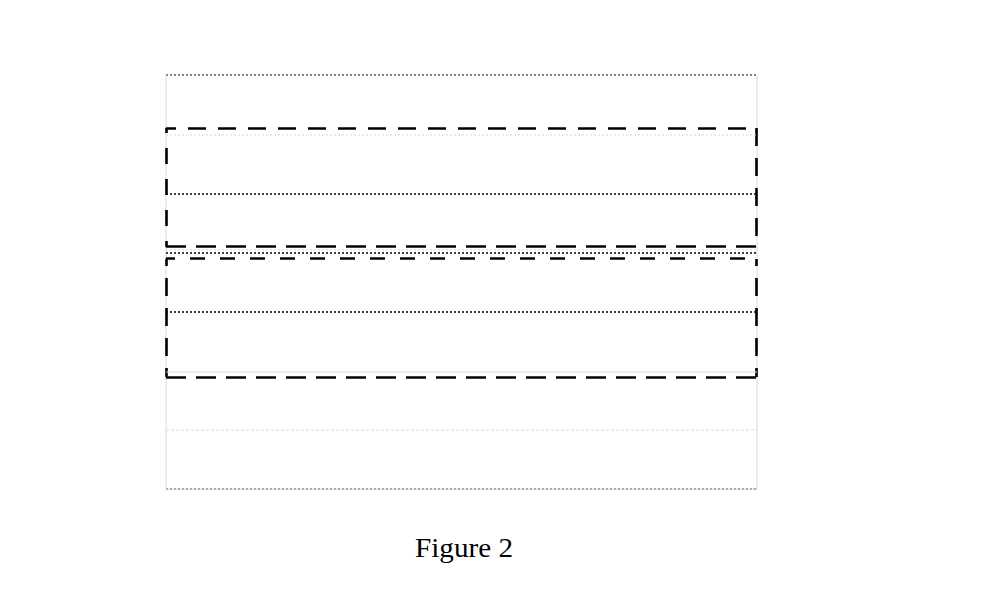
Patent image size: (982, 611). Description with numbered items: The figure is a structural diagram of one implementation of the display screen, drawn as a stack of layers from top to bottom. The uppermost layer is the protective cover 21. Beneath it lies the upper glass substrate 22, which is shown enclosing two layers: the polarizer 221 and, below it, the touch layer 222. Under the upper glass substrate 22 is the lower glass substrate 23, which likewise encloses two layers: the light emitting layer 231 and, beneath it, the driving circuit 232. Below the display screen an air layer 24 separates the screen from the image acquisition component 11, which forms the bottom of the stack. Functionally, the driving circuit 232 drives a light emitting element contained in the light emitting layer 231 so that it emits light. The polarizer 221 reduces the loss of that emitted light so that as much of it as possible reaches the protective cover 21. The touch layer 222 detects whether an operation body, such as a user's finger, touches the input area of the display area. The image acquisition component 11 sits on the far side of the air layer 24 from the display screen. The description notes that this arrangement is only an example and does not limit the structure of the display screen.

The image acquisition component 11 is at (757, 470).
The protective cover 21 is at (757, 107).
The upper glass substrate 22 is at (757, 190).
The polarizer 221 is at (166, 160).
The touch layer 222 is at (166, 217).
The lower glass substrate 23 is at (757, 310).
The light emitting layer 231 is at (166, 277).
The driving circuit 232 is at (166, 357).
The air layer 24 is at (757, 410).